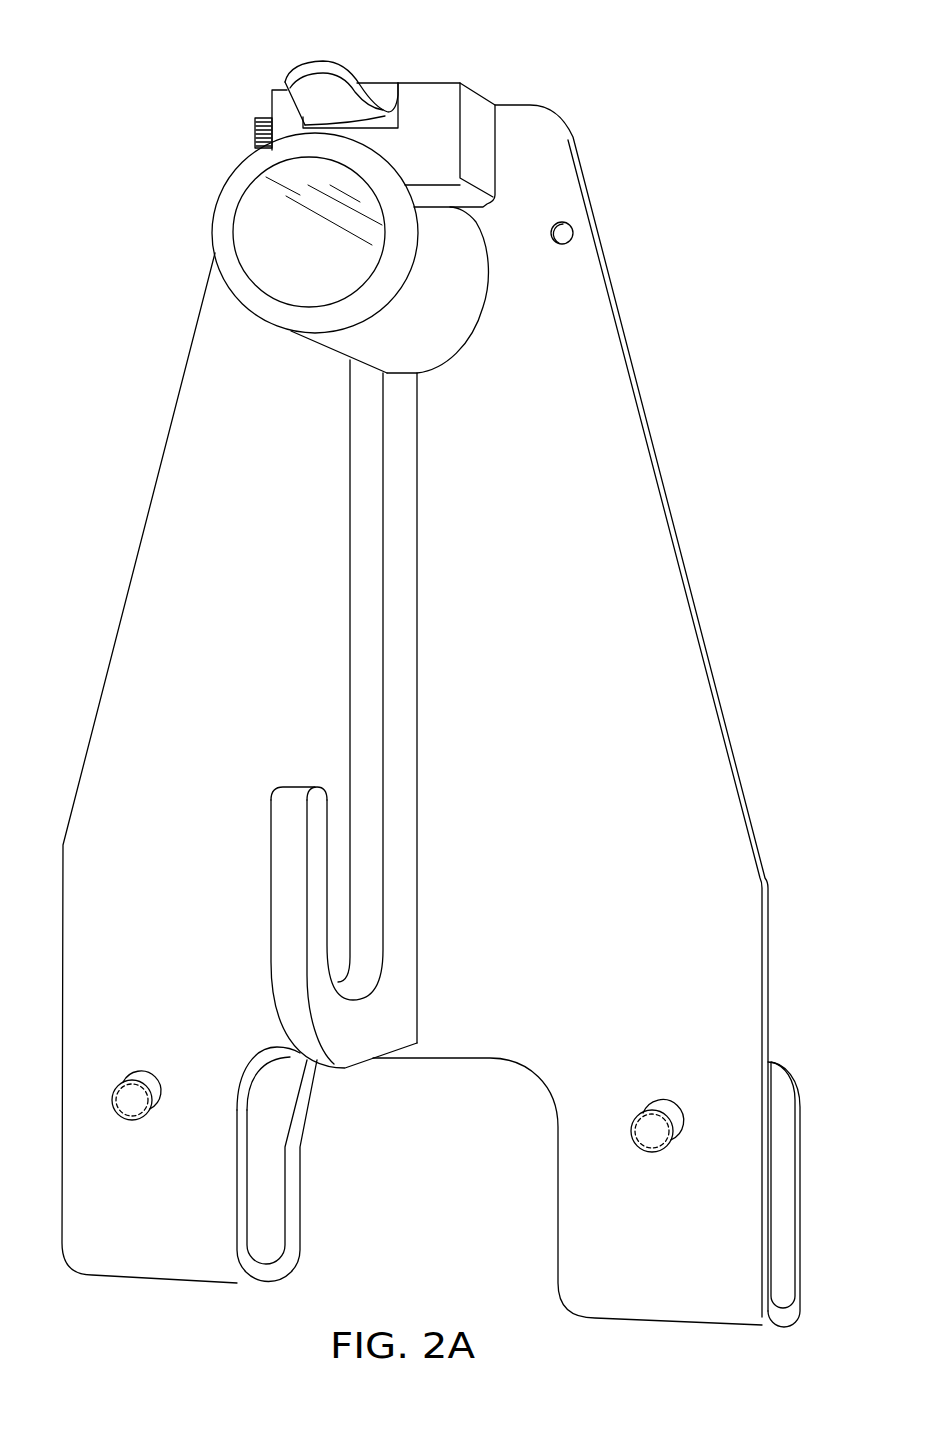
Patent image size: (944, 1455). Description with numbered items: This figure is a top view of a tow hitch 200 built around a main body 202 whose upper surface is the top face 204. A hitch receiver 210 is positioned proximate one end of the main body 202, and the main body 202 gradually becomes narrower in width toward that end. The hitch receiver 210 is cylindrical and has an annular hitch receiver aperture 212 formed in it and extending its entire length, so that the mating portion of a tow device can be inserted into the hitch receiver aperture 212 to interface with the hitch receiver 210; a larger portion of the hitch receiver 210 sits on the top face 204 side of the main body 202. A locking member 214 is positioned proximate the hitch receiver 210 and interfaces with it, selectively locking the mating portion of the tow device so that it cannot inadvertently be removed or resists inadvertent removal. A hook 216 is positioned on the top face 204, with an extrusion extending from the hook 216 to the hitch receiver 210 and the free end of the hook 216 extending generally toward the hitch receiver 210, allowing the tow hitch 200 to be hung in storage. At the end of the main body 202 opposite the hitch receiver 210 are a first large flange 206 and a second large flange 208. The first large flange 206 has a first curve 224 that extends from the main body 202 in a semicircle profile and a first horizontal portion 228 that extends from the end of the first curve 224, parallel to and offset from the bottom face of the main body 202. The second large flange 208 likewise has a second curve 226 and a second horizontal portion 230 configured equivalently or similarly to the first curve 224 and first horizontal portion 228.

The tow hitch 200 is at (725, 127).
The main body 202 is at (662, 462).
The top face 204 is at (560, 687).
The first large flange 206 is at (123, 1293).
The second large flange 208 is at (670, 1326).
The hitch receiver 210 is at (445, 340).
The hitch receiver aperture 212 is at (243, 243).
The locking member 214 is at (333, 52).
The hook 216 is at (272, 843).
The first curve 224 is at (235, 1281).
The second curve 226 is at (774, 1329).
The first horizontal portion 228 is at (292, 1140).
The second horizontal portion 230 is at (798, 1092).